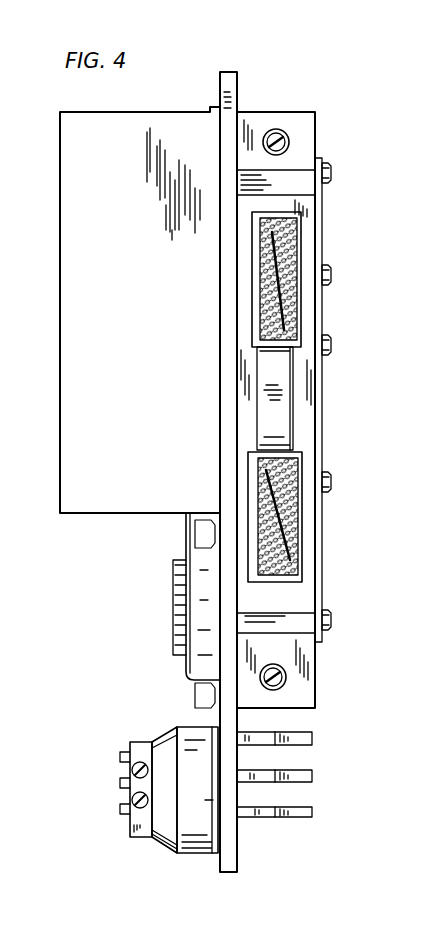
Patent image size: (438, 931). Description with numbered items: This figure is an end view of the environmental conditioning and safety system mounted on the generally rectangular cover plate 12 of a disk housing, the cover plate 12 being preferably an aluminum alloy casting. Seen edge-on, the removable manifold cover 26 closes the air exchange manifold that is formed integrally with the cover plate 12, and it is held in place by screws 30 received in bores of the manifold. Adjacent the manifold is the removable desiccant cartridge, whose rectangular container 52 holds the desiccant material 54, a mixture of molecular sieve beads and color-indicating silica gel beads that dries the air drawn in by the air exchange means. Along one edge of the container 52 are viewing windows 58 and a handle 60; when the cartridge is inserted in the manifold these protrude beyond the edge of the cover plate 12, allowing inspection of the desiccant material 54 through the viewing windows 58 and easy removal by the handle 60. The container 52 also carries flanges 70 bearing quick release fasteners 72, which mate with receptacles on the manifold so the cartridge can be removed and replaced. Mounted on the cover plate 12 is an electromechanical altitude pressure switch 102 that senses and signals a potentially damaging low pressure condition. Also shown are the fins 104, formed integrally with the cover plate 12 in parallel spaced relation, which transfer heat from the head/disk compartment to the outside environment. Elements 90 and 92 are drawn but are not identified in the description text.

The cover plate 12 is at (237, 85).
The manifold cover 26 is at (322, 433).
The screws 30 is at (329, 345).
The container 52 is at (303, 438).
The desiccant material 54 is at (290, 230).
The viewing windows 58 is at (297, 255).
The handle 60 is at (280, 385).
The flanges 70 is at (297, 157).
The quick release fasteners 72 is at (290, 139).
The potentiometer 90 is at (172, 628).
The enclosure box 92 is at (63, 336).
The altitude pressure switch 102 is at (91, 767).
The fins 104 is at (312, 741).